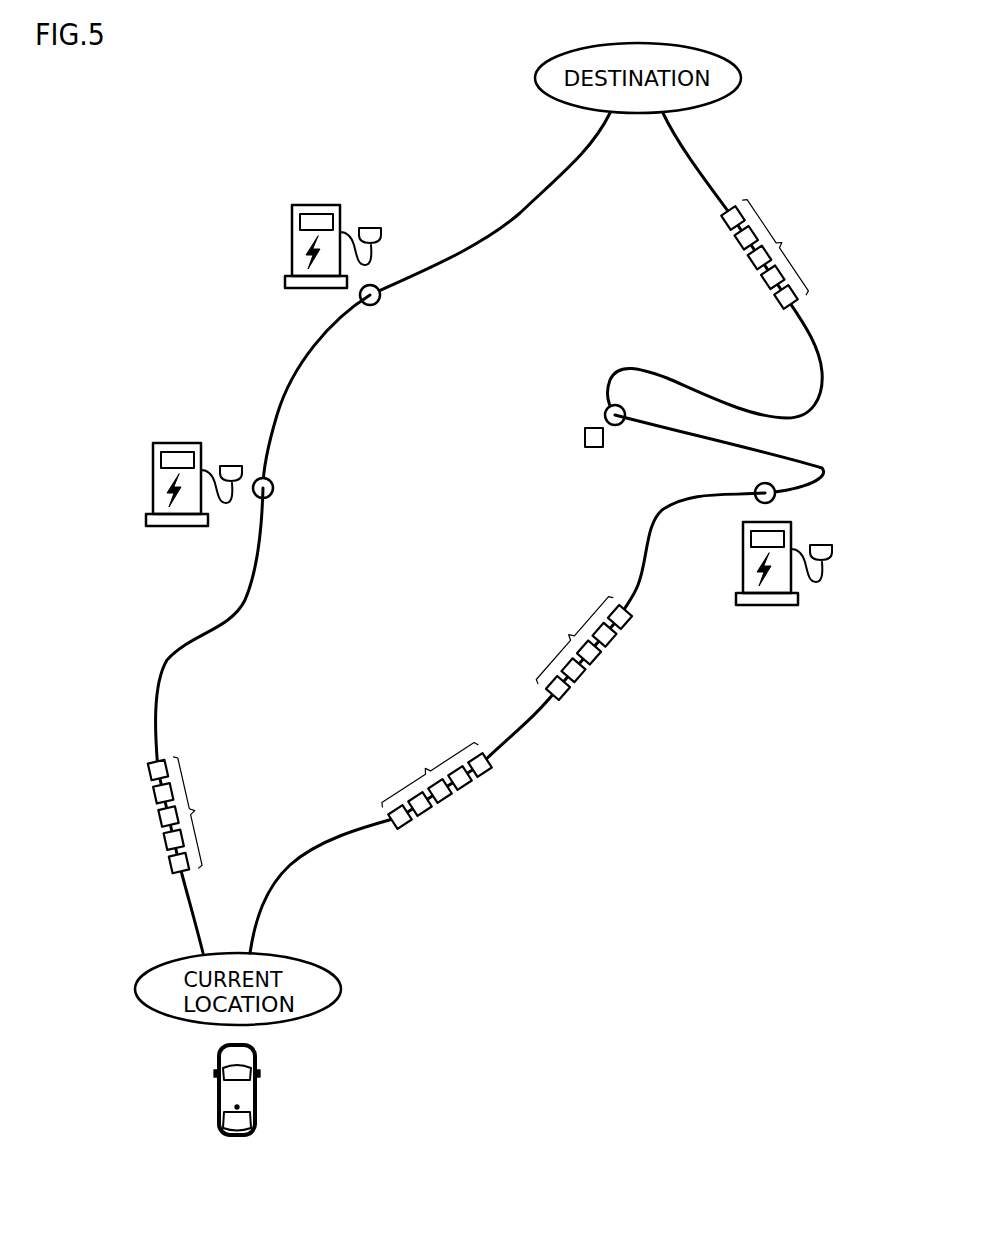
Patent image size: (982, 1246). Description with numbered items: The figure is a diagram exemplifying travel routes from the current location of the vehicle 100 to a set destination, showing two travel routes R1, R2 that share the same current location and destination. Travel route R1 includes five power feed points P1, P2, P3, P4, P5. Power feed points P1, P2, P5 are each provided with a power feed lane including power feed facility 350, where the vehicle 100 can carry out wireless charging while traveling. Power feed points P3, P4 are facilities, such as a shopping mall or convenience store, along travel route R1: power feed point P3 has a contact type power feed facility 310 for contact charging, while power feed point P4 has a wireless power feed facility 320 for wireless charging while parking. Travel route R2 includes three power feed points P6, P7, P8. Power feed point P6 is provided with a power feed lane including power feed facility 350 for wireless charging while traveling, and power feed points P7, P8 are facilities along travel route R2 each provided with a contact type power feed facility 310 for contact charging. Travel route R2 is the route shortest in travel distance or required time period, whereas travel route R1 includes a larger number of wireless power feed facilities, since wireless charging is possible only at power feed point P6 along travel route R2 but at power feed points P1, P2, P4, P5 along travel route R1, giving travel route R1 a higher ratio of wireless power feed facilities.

The vehicle 100 is at (217, 1092).
The contact type power feed facility 310 is at (330, 205).
The wireless power feed facility 320 is at (595, 448).
The power feed facility 350 is at (432, 537).
The power feed point P1 is at (439, 835).
The power feed point P2 is at (602, 689).
The power feed point P3 is at (758, 486).
The power feed point P4 is at (606, 409).
The power feed point P5 is at (765, 187).
The power feed point P6 is at (124, 776).
The power feed point P7 is at (272, 481).
The power feed point P8 is at (377, 303).
The travel route R1 is at (287, 877).
The travel route R2 is at (190, 915).